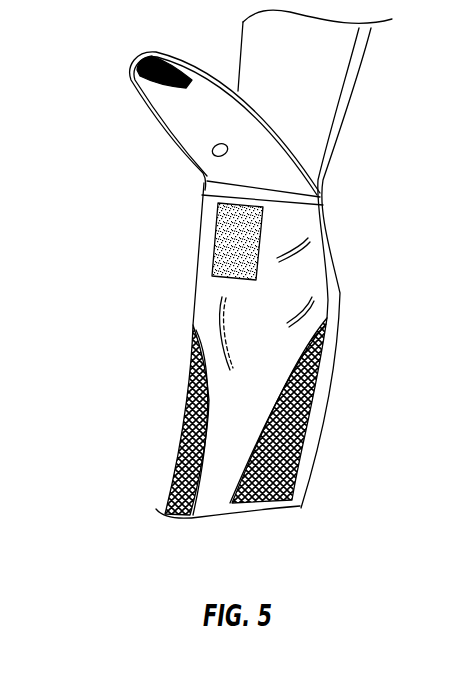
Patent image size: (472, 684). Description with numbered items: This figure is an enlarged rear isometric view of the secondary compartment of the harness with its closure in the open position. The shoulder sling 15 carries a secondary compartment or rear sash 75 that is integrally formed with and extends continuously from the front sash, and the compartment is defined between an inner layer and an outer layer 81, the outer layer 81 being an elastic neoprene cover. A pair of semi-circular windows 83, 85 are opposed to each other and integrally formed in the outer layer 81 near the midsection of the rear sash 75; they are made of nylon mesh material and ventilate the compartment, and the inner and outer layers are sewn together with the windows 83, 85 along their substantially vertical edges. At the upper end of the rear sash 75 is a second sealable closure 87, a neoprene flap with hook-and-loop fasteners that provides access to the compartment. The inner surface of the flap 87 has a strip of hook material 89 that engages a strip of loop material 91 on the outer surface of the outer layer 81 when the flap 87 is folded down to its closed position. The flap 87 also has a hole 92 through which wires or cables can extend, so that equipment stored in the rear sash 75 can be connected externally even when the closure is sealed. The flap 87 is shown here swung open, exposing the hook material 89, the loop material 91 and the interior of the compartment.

The shoulder sling 15 is at (117, 262).
The rear sash 75 is at (345, 231).
The outer layer 81 is at (212, 290).
The semi-circular window 83 is at (187, 410).
The semi-circular window 85 is at (305, 427).
The second sealable closure 87 is at (197, 123).
The strip of hook material 89 is at (133, 90).
The strip of loop material 91 is at (215, 237).
The hole 92 is at (187, 130).